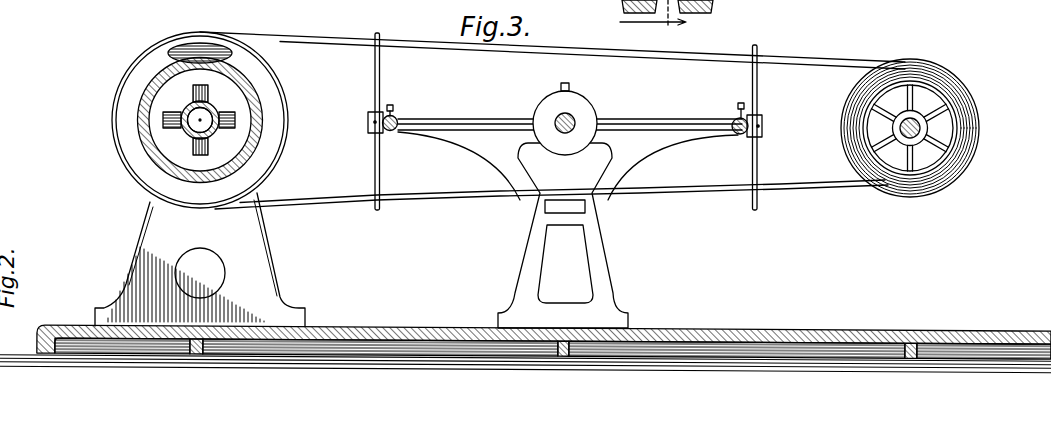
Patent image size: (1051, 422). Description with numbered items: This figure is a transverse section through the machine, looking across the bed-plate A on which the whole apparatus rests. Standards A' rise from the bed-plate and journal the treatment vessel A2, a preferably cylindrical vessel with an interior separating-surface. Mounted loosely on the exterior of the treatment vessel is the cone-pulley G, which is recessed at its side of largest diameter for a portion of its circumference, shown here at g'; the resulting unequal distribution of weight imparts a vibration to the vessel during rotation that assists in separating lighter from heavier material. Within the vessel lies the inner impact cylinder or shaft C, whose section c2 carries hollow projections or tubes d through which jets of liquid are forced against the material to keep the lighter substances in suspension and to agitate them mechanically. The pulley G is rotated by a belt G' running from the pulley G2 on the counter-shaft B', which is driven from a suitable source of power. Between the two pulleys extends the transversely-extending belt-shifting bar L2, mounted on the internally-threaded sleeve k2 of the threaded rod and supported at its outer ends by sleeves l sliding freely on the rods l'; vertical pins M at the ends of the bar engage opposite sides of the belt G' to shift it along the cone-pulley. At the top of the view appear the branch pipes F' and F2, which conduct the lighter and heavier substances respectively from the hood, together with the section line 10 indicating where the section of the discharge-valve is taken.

The bed-plate A is at (525, 334).
The standard A' is at (202, 259).
The treatment vessel A2 is at (257, 150).
The loose cone-pulley G is at (185, 120).
The slot g' is at (195, 34).
The hollow projections or tubes d is at (235, 117).
The inner impact cylinder or shaft C is at (198, 123).
The section of inner cylinder c2 is at (188, 133).
The belt G' is at (552, 120).
The vertical pins M is at (375, 143).
The belt-shifting bar L2 is at (570, 107).
The sleeve l is at (565, 113).
The rod l' is at (566, 146).
The internally-threaded sleeve k2 is at (568, 202).
The pulley G2 is at (953, 78).
The counter-shaft B' is at (953, 129).
The branch pipe F' is at (612, 16).
The branch pipe F2 is at (713, 10).
The section line 10 is at (653, 24).